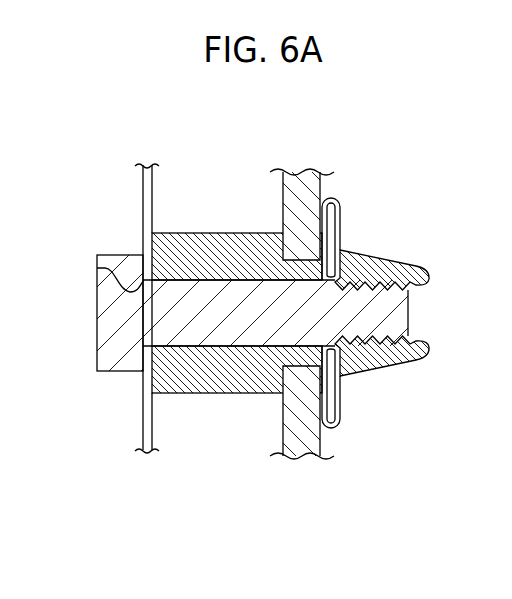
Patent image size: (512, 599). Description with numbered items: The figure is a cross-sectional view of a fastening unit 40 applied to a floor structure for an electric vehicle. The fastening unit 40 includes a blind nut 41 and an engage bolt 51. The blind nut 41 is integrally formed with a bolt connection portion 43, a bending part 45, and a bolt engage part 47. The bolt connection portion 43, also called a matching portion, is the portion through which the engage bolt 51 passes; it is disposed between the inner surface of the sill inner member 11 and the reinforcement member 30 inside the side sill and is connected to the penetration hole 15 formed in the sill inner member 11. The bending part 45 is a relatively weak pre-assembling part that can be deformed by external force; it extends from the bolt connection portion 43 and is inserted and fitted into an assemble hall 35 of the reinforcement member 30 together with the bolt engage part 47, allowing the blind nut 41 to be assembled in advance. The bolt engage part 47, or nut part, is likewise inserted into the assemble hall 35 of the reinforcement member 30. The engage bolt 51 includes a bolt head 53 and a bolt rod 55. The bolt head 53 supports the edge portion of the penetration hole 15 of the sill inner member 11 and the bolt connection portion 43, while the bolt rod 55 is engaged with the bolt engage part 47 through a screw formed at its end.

The sill inner member 11 is at (143, 190).
The penetration hole 15 is at (97, 268).
The reinforcement member 30 is at (340, 185).
The assemble hall 35 is at (342, 262).
The fastening unit 40 is at (207, 419).
The blind nut 41 is at (237, 222).
The bolt connection portion 43 is at (196, 250).
The bending part 45 is at (338, 202).
The bolt engage part 47 is at (403, 264).
The engage bolt 51 is at (86, 305).
The bolt head 53 is at (97, 349).
The bolt rod 55 is at (238, 318).